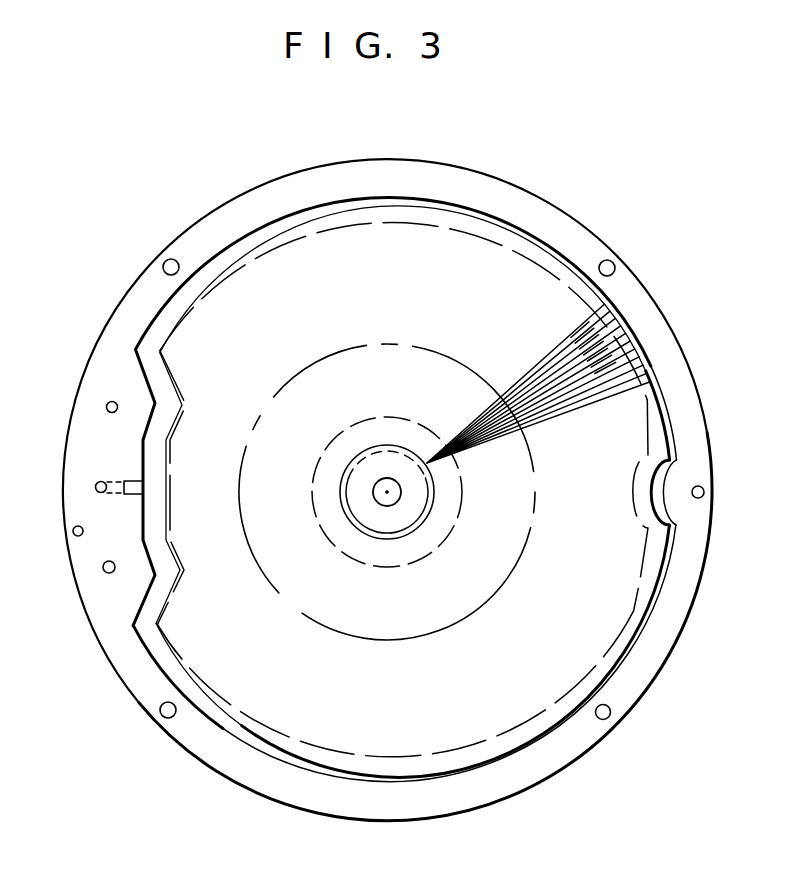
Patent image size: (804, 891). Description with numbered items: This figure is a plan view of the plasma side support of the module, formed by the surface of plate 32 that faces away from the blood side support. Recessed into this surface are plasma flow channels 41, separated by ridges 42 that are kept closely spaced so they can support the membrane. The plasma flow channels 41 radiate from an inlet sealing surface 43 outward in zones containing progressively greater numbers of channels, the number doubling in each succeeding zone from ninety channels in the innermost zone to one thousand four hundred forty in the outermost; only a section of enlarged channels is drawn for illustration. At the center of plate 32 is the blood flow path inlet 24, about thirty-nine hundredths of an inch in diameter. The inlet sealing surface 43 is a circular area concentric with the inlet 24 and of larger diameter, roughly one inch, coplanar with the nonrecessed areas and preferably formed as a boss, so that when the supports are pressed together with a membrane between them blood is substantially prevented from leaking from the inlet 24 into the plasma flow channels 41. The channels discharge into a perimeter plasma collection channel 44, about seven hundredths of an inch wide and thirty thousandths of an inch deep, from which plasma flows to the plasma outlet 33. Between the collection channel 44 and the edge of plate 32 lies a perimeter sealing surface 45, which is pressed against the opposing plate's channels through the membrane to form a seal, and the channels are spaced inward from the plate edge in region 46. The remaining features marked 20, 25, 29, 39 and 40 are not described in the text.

The hole 20 is at (104, 571).
The blood flow path inlet 24 is at (383, 505).
The mounting holes 25 is at (170, 258).
The hole 29 is at (106, 406).
The plate 32 is at (580, 774).
The plasma outlet 33 is at (95, 489).
The hole 39 is at (73, 535).
The hole 40 is at (704, 489).
The plasma flow channels 41 is at (537, 362).
The ridges 42 is at (520, 367).
The inlet sealing surface 43 is at (412, 513).
The perimeter plasma collection channel 44 is at (151, 656).
The perimeter sealing surface 45 is at (199, 738).
The region 46 is at (124, 553).